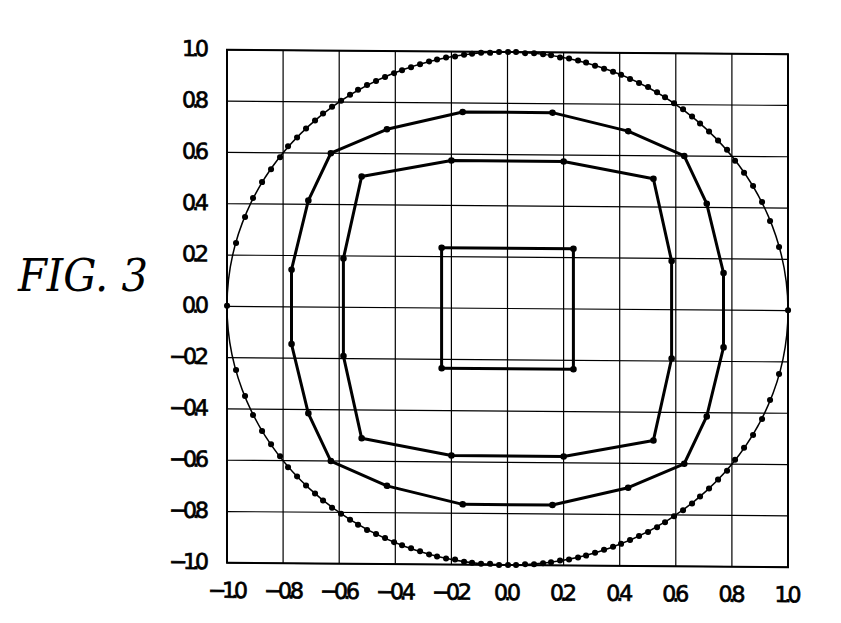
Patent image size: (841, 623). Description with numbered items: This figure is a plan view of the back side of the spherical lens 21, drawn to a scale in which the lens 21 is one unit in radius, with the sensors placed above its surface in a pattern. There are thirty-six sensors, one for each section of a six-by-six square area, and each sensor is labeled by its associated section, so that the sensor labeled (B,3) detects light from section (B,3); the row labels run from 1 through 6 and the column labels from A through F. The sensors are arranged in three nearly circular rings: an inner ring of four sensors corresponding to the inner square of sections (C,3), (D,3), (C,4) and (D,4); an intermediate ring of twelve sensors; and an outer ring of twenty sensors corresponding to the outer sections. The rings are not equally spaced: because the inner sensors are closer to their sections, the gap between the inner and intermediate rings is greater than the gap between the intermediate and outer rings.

The spherical lens 21 is at (377, 82).
The row 1 mapped grid points 1 is at (502, 499).
The row 2 mapped grid points 2 is at (508, 430).
The row 3 mapped grid points 3 is at (507, 367).
The row 4 mapped grid points 4 is at (507, 248).
The row 5 mapped grid points 5 is at (506, 184).
The row 6 mapped grid points 6 is at (506, 117).